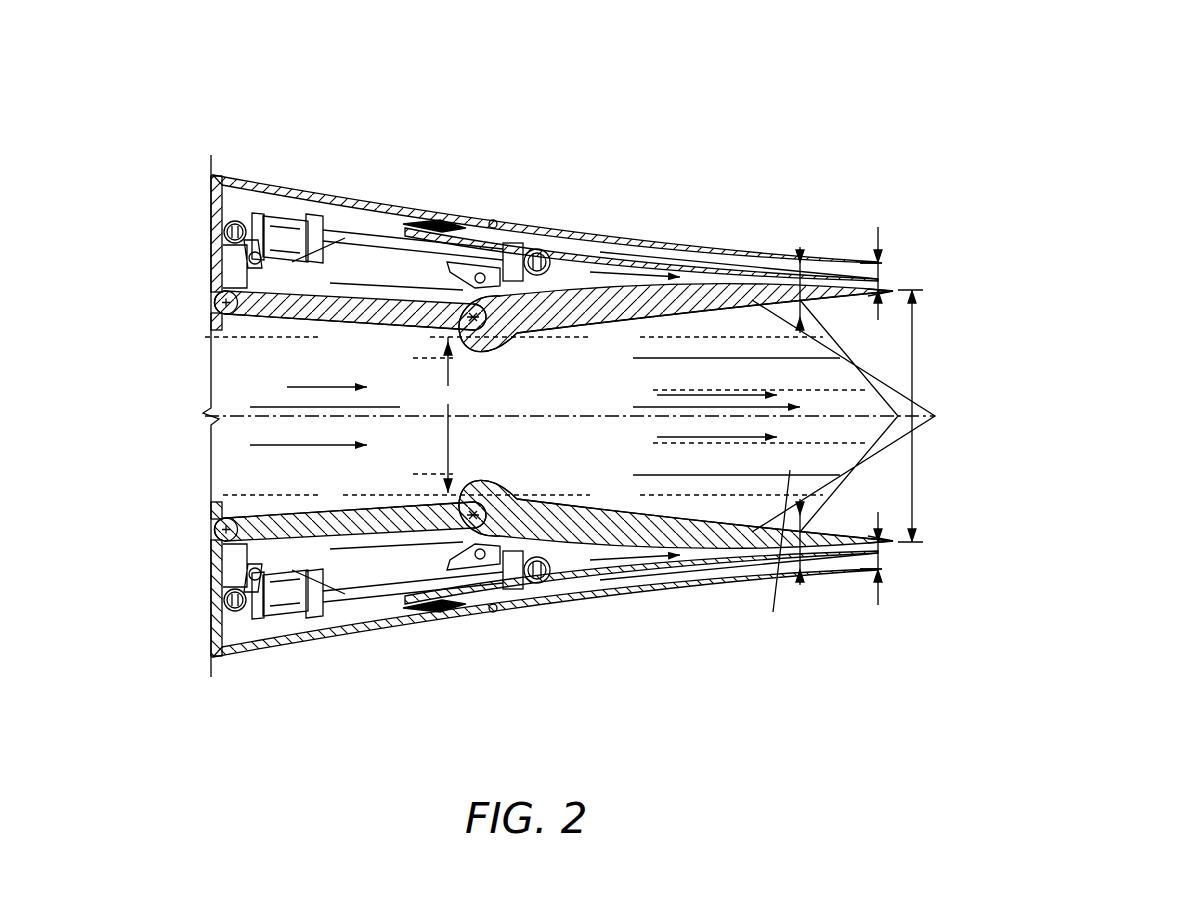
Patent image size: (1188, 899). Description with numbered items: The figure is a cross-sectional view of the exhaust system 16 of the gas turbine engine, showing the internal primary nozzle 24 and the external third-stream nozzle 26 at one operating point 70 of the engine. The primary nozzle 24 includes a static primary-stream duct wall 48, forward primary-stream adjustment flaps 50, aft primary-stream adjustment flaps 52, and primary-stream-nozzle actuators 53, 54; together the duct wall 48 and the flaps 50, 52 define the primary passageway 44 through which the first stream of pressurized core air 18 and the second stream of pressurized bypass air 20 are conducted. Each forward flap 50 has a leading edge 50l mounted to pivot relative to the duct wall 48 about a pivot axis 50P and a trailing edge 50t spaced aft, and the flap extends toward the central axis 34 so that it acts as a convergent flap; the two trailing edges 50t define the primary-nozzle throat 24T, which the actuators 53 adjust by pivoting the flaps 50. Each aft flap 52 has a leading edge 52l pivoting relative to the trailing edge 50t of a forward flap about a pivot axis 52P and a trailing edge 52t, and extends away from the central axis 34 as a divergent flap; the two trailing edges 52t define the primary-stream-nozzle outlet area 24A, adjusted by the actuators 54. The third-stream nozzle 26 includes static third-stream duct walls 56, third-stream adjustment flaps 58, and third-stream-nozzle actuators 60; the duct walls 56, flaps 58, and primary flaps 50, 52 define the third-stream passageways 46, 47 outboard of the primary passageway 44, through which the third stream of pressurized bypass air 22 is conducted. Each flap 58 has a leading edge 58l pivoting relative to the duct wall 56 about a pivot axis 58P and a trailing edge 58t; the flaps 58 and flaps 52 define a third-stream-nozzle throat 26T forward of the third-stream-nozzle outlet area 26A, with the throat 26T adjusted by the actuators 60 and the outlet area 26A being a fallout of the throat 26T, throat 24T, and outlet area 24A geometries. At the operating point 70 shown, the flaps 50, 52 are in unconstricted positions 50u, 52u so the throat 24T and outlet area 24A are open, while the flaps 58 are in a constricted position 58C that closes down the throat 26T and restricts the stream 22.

The exhaust system 16 is at (882, 75).
The first stream of pressurized core air 18 is at (282, 406).
The second stream of pressurized bypass air 20 is at (320, 385).
The third stream of pressurized bypass air 22 is at (386, 260).
The primary nozzle 24 is at (1048, 325).
The primary-stream-nozzle outlet area 24A is at (914, 312).
The primary-nozzle-throat 24T is at (451, 415).
The third-stream nozzle 26 is at (985, 197).
The third-stream-nozzle outlet area 26A is at (880, 272).
The third-stream-nozzle throat 26T is at (840, 300).
The central axis 34 is at (776, 556).
The primary passageway 44 is at (228, 356).
The third-stream passageway 46 is at (283, 233).
The third-stream passageway 47 is at (270, 642).
The static primary-stream duct wall 48 is at (207, 302).
The forward primary-stream adjustment flap 50 is at (240, 292).
The pivot axis 50P is at (222, 296).
The leading edge 50l is at (236, 334).
The unconstricted position 50u is at (330, 335).
The trailing edge 50t is at (480, 305).
The aft primary-stream adjustment flap 52 is at (735, 285).
The leading edge 52l is at (518, 248).
The unconstricted position 52u is at (692, 315).
The trailing edge 52t is at (898, 287).
The pivot axis 52P is at (542, 249).
The primary-stream-nozzle actuator 53 is at (225, 232).
The primary-stream-nozzle actuator 54 is at (563, 270).
The static third-stream duct wall 56 is at (330, 190).
The third-stream adjustment flap 58 is at (697, 270).
The leading edge 58l is at (463, 208).
The pivot axis 58P is at (493, 217).
The constricted position 58C is at (654, 250).
The trailing edge 58t is at (886, 650).
The third-stream-nozzle actuator 60 is at (493, 276).
The operating point 70 is at (958, 135).